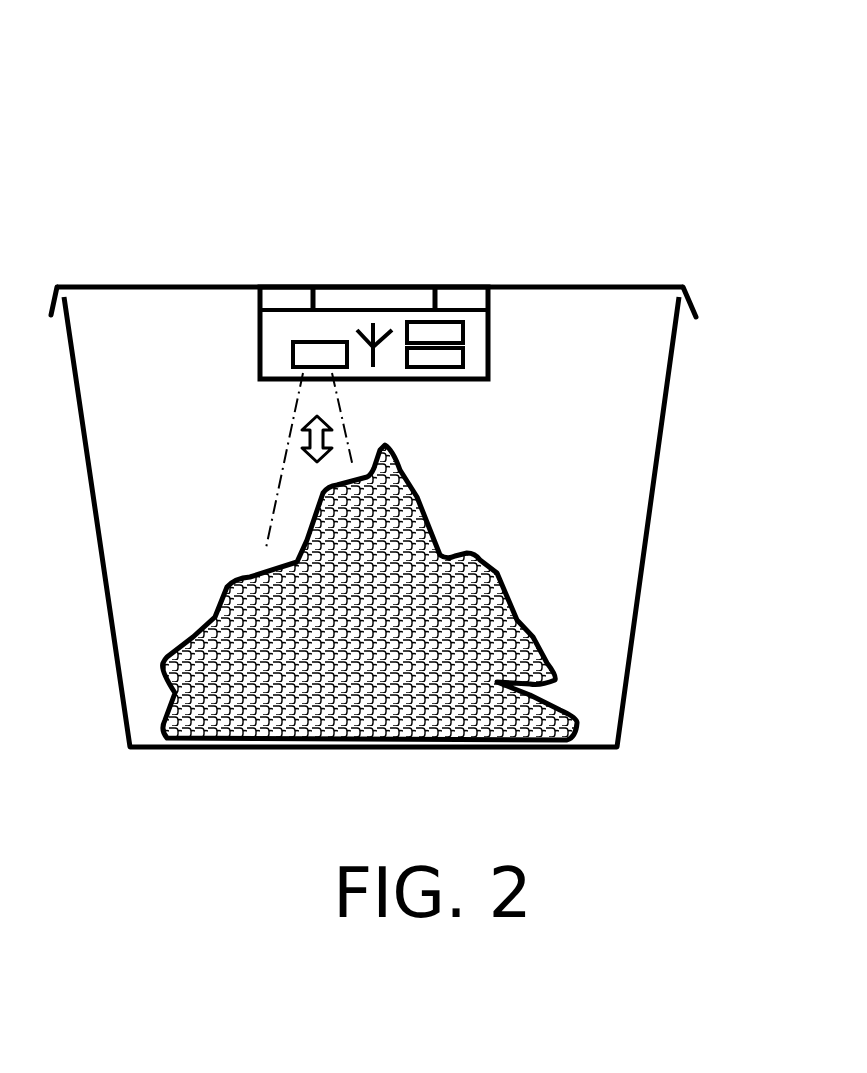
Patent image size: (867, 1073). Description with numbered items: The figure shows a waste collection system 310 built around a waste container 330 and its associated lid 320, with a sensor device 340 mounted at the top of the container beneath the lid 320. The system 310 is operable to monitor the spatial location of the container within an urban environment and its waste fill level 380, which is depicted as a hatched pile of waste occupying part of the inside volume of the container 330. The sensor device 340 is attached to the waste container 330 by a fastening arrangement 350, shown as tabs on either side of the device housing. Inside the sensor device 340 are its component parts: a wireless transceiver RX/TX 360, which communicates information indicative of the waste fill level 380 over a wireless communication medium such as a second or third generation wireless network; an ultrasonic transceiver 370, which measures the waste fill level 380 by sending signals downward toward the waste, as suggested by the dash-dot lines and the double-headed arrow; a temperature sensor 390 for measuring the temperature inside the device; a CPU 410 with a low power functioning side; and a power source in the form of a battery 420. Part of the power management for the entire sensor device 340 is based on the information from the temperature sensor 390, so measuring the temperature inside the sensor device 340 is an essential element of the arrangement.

The waste collection system 310 is at (177, 97).
The lid 320 is at (580, 287).
The waste container 330 is at (643, 590).
The sensor device 340 is at (270, 345).
The fastening arrangement 350 is at (287, 298).
The wireless transceiver RX/TX 360 is at (368, 303).
The ultrasonic transceiver 370 is at (333, 350).
The waste fill level 380 is at (300, 697).
The temperature sensor 390 is at (368, 358).
The CPU 410 is at (443, 333).
The battery 420 is at (445, 362).